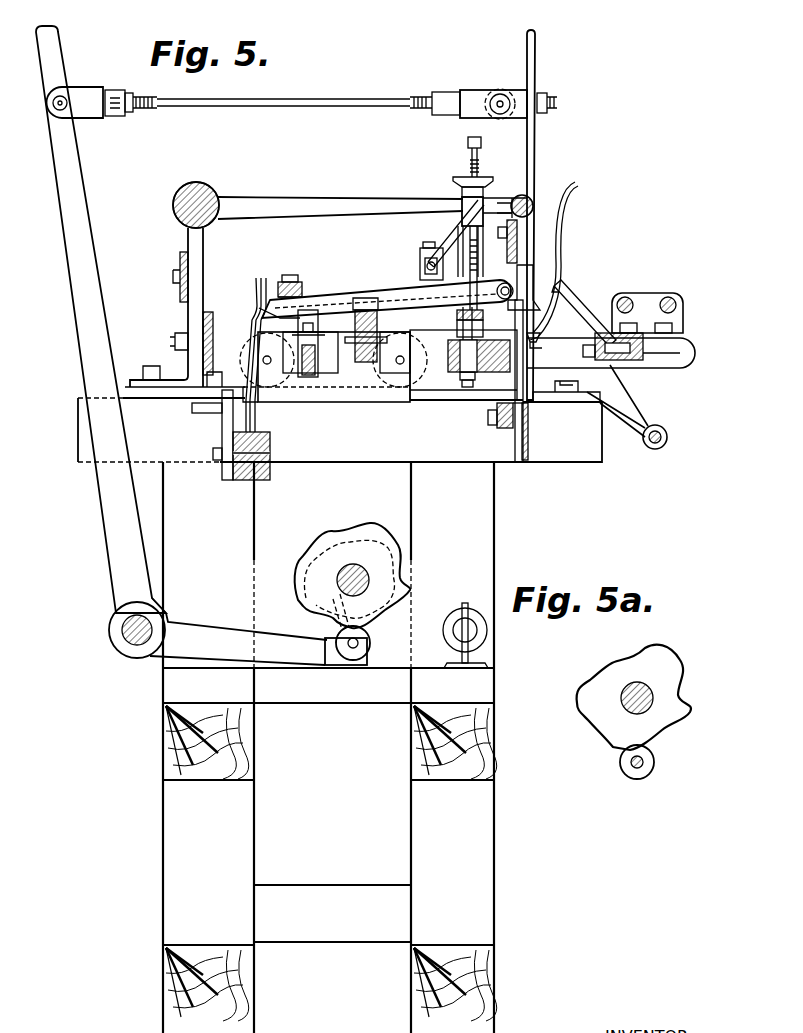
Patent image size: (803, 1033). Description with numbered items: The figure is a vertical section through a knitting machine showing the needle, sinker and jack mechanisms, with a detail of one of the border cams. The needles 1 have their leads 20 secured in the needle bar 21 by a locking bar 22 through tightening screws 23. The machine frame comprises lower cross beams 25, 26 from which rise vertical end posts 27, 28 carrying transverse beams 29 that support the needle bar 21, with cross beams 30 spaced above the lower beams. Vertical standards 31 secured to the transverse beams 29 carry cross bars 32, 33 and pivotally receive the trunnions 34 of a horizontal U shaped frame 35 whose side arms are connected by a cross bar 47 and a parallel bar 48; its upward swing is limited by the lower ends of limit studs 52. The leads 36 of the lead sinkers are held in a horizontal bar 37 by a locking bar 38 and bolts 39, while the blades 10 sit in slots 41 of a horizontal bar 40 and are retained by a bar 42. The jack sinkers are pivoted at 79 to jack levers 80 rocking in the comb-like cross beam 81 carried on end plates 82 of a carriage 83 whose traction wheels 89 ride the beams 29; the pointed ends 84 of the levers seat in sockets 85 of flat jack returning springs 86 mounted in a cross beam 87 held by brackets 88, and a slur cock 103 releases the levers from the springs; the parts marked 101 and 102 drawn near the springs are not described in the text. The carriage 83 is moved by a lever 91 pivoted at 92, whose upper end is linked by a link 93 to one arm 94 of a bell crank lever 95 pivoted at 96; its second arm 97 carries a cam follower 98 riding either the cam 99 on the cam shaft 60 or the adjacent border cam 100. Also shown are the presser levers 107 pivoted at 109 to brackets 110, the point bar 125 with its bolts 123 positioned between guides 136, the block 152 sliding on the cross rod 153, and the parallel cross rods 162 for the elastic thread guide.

In FIG. 5, the needles 1 is at (540, 346).
In FIG. 5, the blades of the lead sinkers 10 is at (497, 397).
In FIG. 5, the leads 20 is at (492, 372).
In FIG. 5, the needle bar 21 is at (451, 373).
In FIG. 5, the locking bar 22 is at (455, 339).
In FIG. 5, the tightening screws 23 is at (482, 389).
In FIG. 5, the lower cross beam 25 is at (253, 988).
In FIG. 5, the lower cross beam 26 is at (413, 983).
In FIG. 5, the vertical end post 27 is at (163, 862).
In FIG. 5, the vertical end post 28 is at (494, 808).
In FIG. 5, the transverse beams 29 is at (580, 459).
In FIG. 5, the cross beams 30 is at (254, 742).
In FIG. 5, the vertical standards 31 is at (189, 239).
In FIG. 5, the cross bar 32 is at (212, 313).
In FIG. 5, the cross bar 33 is at (177, 266).
In FIG. 5, the trunnions 34 is at (208, 187).
In FIG. 5, the horizontal U shaped frame 35 is at (283, 207).
In FIG. 5, the leads of the lead sinkers 36 is at (498, 240).
In FIG. 5, the horizontal bar 37 is at (511, 287).
In FIG. 5, the locking bar 38 is at (517, 228).
In FIG. 5, the bolts 39 is at (460, 226).
In FIG. 5, the horizontal bar 40 is at (497, 426).
In FIG. 5, the slots 41 is at (523, 412).
In FIG. 5, the bar 42 is at (528, 443).
In FIG. 5, the cross bar 47 is at (462, 205).
In FIG. 5, the parallel bar 48 is at (173, 200).
In FIG. 5, the limit studs 52 is at (481, 143).
In FIG. 5, the cam shaft 60 is at (325, 618).
In FIG. 5, the pivotal connection 79 is at (513, 286).
In FIG. 5, the jack levers 80 is at (403, 294).
In FIG. 5, the cross beam 81 is at (362, 365).
In FIG. 5, the end plates 82 is at (317, 400).
In FIG. 5, the carriage 83 is at (401, 400).
In FIG. 5, the pointed ends 84 is at (281, 292).
In FIG. 5, the sockets 85 is at (262, 295).
In FIG. 5, the jack returning springs 86 is at (254, 288).
In FIG. 5, the cross beam 87 is at (270, 440).
In FIG. 5, the brackets 88 is at (222, 436).
In FIG. 5, the traction wheels 89 is at (334, 360).
In FIG. 5, the lever 91 is at (537, 150).
In FIG. 5, the pivot 92 is at (530, 198).
In FIG. 5, the link 93 is at (305, 112).
In FIG. 5, the arm of the bell crank lever 94 is at (76, 300).
In FIG. 5, the bell crank lever 95 is at (170, 616).
In FIG. 5, the pivot 96 is at (124, 642).
In FIG. 5, the second arm of the bell crank lever 97 is at (238, 639).
In FIG. 5, the cam follower 98 is at (372, 650).
In FIG. 5, the cam 99 is at (322, 543).
In FIG. 5, the cam 100 is at (364, 598).
In FIG. 5A, the cam 100 is at (629, 660).
In FIG. 5, the screw 101 is at (300, 283).
In FIG. 5, the plate 102 is at (302, 297).
In FIG. 5, the slur cock 103 is at (306, 376).
In FIG. 5, the levers 107 is at (575, 295).
In FIG. 5, the pivots 109 is at (668, 436).
In FIG. 5, the brackets 110 is at (629, 430).
In FIG. 5, the bolts 123 is at (683, 313).
In FIG. 5, the point bar 125 is at (640, 362).
In FIG. 5, the guides 136 is at (696, 353).
In FIG. 5, the block 152 is at (425, 248).
In FIG. 5, the cross rod 153 is at (420, 262).
In FIG. 5, the cross rods 162 is at (665, 297).